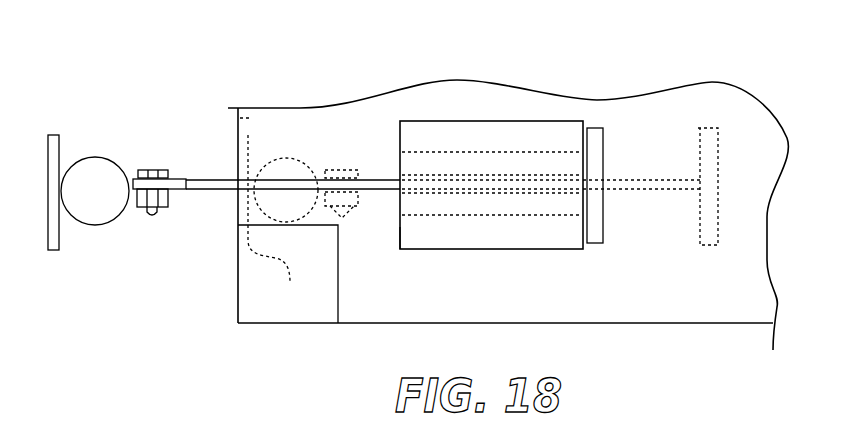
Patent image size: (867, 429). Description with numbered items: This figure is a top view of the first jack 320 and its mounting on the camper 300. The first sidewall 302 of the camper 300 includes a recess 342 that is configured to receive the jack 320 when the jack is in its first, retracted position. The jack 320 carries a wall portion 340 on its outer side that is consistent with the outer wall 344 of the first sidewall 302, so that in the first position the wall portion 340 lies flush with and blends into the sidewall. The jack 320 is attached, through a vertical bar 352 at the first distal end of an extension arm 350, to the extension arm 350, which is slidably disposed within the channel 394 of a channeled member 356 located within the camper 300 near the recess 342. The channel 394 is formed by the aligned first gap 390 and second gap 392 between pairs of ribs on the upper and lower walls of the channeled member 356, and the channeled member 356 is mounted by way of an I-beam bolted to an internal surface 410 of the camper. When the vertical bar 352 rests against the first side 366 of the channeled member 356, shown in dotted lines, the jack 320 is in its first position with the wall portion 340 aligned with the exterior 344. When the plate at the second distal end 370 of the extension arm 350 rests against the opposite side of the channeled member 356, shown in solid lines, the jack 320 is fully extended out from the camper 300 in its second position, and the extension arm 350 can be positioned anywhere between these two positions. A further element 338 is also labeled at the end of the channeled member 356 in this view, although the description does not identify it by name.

The camper 300 is at (740, 190).
The first sidewall 302 is at (237, 200).
The first jack 320 is at (89, 178).
The end cap 338 is at (595, 243).
The wall portion 340 is at (47, 160).
The recess 342 is at (270, 128).
The outer wall 344 is at (237, 207).
The extension arm 350 is at (208, 180).
The vertical bar 352 is at (152, 178).
The channeled member 356 is at (478, 138).
The first side 366 is at (400, 227).
The second distal end 370 is at (592, 158).
The first gap 390 is at (490, 257).
The second gap 392 is at (490, 250).
The channel 394 is at (440, 183).
The internal surface 410 is at (702, 298).